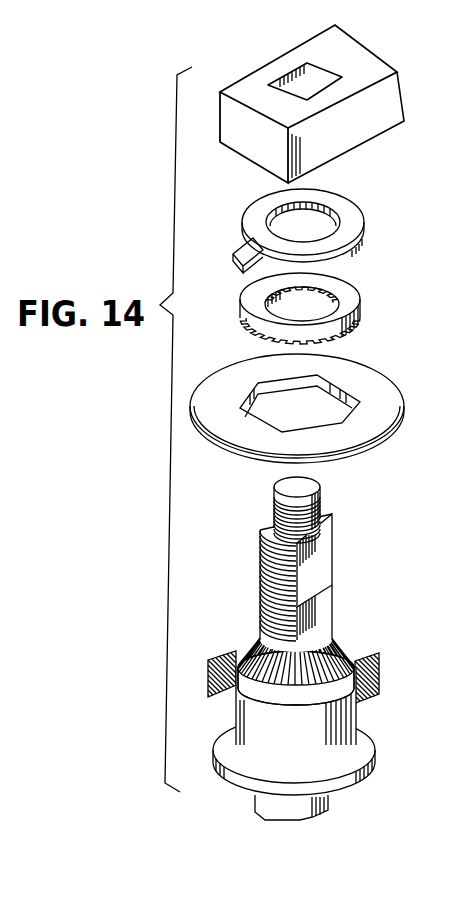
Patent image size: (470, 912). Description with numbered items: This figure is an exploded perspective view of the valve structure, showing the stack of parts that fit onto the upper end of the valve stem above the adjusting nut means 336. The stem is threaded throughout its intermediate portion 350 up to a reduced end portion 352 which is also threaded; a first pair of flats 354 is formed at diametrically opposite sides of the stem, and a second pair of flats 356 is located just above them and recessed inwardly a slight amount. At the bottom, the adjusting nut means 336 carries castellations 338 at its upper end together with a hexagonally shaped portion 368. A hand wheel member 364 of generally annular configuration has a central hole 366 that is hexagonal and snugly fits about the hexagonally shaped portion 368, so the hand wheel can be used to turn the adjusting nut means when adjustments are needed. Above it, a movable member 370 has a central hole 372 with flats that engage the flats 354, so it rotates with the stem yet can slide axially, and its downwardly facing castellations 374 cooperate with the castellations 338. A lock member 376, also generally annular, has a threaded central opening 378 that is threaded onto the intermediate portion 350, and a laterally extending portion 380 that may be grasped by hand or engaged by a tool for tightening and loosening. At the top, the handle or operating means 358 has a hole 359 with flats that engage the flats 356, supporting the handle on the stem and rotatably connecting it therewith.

The handle or operating means 358 is at (380, 117).
The hole 359 is at (327, 74).
The lock member 376 is at (350, 213).
The central opening 378 is at (326, 212).
The laterally extending portion 380 is at (246, 253).
The movable member 370 is at (352, 299).
The central hole 372 is at (317, 293).
The castellations 374 is at (353, 336).
The hand wheel member 364 is at (388, 398).
The central hole 366 is at (330, 392).
The reduced end portion 352 is at (323, 502).
The second pair of flats 356 is at (323, 557).
The intermediate portion 350 is at (263, 585).
The first pair of flats 354 is at (325, 607).
The castellations 338 is at (355, 655).
The hexagonally shaped portion 368 is at (380, 674).
The adjusting nut means 336 is at (355, 710).